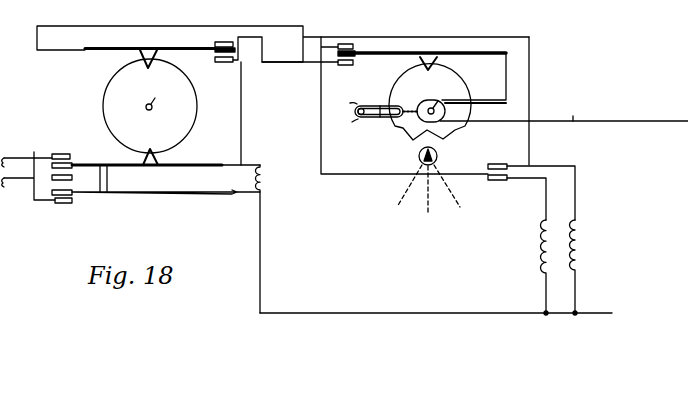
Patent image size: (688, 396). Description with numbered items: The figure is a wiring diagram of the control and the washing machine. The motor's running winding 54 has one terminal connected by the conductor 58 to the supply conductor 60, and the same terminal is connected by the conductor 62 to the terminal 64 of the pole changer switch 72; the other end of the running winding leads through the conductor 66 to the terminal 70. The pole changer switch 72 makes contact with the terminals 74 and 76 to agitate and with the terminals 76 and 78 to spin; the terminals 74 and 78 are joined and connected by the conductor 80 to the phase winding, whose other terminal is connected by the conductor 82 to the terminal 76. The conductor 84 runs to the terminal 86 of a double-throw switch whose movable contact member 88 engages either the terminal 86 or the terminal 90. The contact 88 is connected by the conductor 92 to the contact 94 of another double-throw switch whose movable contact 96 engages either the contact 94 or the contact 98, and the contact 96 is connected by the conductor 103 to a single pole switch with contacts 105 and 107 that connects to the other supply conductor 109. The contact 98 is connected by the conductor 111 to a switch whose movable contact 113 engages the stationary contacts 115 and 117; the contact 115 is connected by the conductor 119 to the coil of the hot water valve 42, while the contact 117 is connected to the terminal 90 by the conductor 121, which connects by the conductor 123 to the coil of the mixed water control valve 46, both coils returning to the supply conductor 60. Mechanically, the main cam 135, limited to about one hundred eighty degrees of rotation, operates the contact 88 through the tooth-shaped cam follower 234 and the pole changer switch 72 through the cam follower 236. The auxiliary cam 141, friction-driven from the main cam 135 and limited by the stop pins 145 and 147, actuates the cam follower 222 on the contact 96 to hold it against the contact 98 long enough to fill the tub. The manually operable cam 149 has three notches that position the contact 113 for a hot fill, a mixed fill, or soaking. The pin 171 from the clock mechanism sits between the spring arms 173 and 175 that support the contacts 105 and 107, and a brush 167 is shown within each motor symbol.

The conductor 92 is at (202, 27).
The movable contact member 88 is at (213, 49).
The terminal 86 is at (228, 40).
The terminal 90 is at (227, 62).
The conductor 84 is at (242, 82).
The main cam 135 is at (197, 103).
The tooth-shaped cam follower 234 is at (158, 61).
The cam follower 236 is at (155, 160).
The brush 167 is at (297, 95).
The conductor 82 is at (34, 180).
The conductor 80 is at (30, 148).
The terminal 78 is at (62, 154).
The terminal 76 is at (72, 178).
The terminal 74 is at (55, 202).
The terminal 64 is at (79, 196).
The terminal 70 is at (100, 163).
The pole changer switch 72 is at (108, 190).
The conductor 62 is at (233, 195).
The conductor 66 is at (242, 164).
The running winding 54 is at (256, 182).
The conductor 58 is at (342, 314).
The conductor 111 is at (336, 175).
The conductor 121 is at (530, 78).
The contact 98 is at (353, 45).
The movable contact 96 is at (356, 57).
The contact 94 is at (346, 65).
The cam follower 222 is at (430, 53).
The conductor 103 is at (506, 65).
The auxiliary cam 141 is at (450, 72).
The contact 105 is at (396, 86).
The pin 171 is at (356, 112).
The spring arm 173 is at (344, 97).
The spring arm 175 is at (344, 128).
The contact 107 is at (393, 128).
The supply conductor 109 is at (564, 129).
The stop pin 145 is at (450, 152).
The stop pin 147 is at (401, 156).
The manually operable cam 149 is at (418, 170).
The stationary contact 117 is at (500, 164).
The movable contact 113 is at (508, 178).
The stationary contact 115 is at (495, 182).
The conductor 123 is at (576, 191).
The conductor 119 is at (546, 209).
The hot water valve 42 is at (541, 273).
The mixed water control valve 46 is at (580, 261).
The supply conductor 60 is at (567, 314).